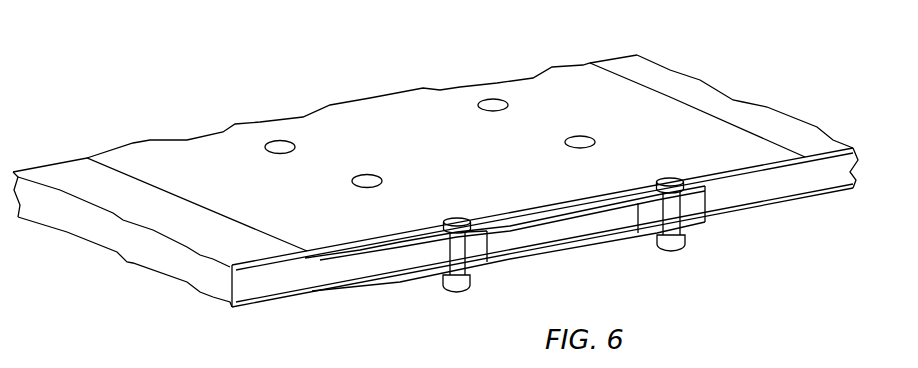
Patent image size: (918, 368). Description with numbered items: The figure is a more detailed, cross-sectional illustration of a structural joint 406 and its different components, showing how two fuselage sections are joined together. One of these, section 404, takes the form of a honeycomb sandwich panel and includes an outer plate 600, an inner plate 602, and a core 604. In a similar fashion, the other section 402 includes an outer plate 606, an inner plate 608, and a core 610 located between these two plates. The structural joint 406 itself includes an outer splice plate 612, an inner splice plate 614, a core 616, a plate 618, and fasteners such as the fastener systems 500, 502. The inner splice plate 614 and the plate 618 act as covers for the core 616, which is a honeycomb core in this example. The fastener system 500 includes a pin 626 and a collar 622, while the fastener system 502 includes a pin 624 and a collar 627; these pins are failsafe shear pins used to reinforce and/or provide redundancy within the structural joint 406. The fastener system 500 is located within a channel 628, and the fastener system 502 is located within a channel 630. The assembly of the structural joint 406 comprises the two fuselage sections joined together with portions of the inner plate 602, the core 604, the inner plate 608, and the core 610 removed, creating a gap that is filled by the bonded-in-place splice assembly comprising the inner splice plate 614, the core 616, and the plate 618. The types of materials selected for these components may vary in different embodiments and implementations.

The section 402 is at (625, 62).
The section 404 is at (57, 165).
The structural joint 406 is at (372, 107).
The fastener system 500 is at (423, 260).
The fastener system 502 is at (670, 218).
The outer plate 600 is at (173, 218).
The inner plate 602 is at (260, 305).
The core 604 is at (285, 282).
The outer plate 606 is at (703, 74).
The inner plate 608 is at (762, 212).
The core 610 is at (815, 178).
The outer splice plate 612 is at (737, 96).
The inner splice plate 614 is at (523, 235).
The core 616 is at (598, 225).
The plate 618 is at (562, 217).
The collar 622 is at (455, 293).
The pin 624 is at (662, 213).
The pin 626 is at (455, 250).
The collar 627 is at (670, 253).
The channel 628 is at (475, 267).
The channel 630 is at (690, 223).